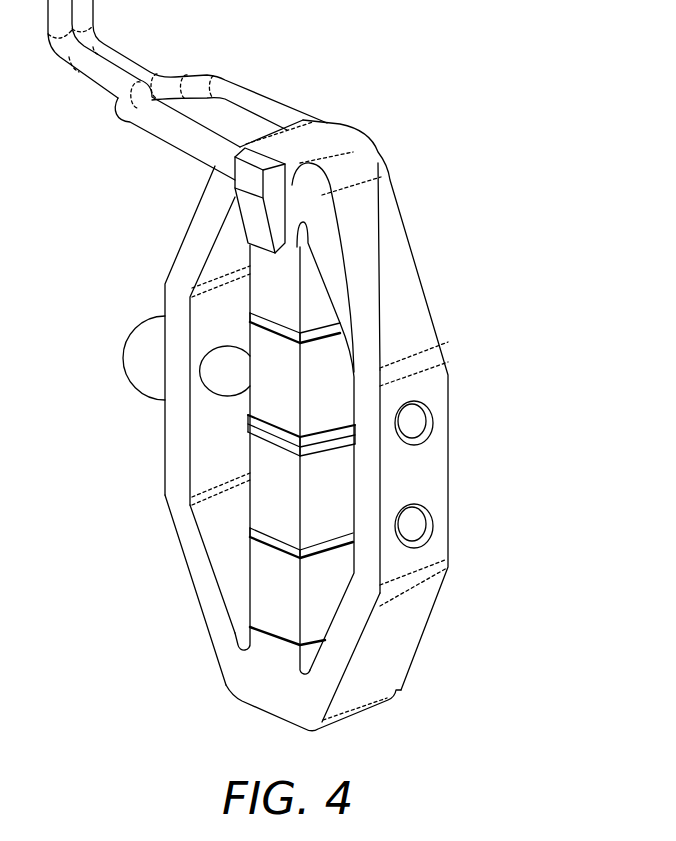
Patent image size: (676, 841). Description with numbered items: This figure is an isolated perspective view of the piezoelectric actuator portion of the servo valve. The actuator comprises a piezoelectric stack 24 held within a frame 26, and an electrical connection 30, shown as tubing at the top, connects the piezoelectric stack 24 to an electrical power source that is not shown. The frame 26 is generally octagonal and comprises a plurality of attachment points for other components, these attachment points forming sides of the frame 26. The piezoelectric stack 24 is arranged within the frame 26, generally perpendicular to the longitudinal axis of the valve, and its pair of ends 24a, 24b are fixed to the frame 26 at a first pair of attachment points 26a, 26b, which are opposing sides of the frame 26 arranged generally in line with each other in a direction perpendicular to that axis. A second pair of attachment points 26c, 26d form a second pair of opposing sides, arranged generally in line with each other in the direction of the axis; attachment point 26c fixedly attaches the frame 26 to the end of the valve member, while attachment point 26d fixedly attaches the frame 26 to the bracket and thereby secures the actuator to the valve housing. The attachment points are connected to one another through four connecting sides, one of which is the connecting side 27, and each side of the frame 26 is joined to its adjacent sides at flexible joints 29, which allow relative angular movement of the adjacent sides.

The electrical connection 30 is at (196, 77).
The frame 26 is at (448, 343).
The attachment point 26a is at (292, 185).
The attachment point 26b is at (259, 698).
The attachment point 26c is at (165, 296).
The attachment point 26d is at (448, 468).
The connecting side 27 is at (188, 560).
The flexible joint 29 is at (442, 574).
The piezoelectric stack 24 is at (333, 358).
The end of piezoelectric stack 24a is at (293, 237).
The end of piezoelectric stack 24b is at (245, 630).